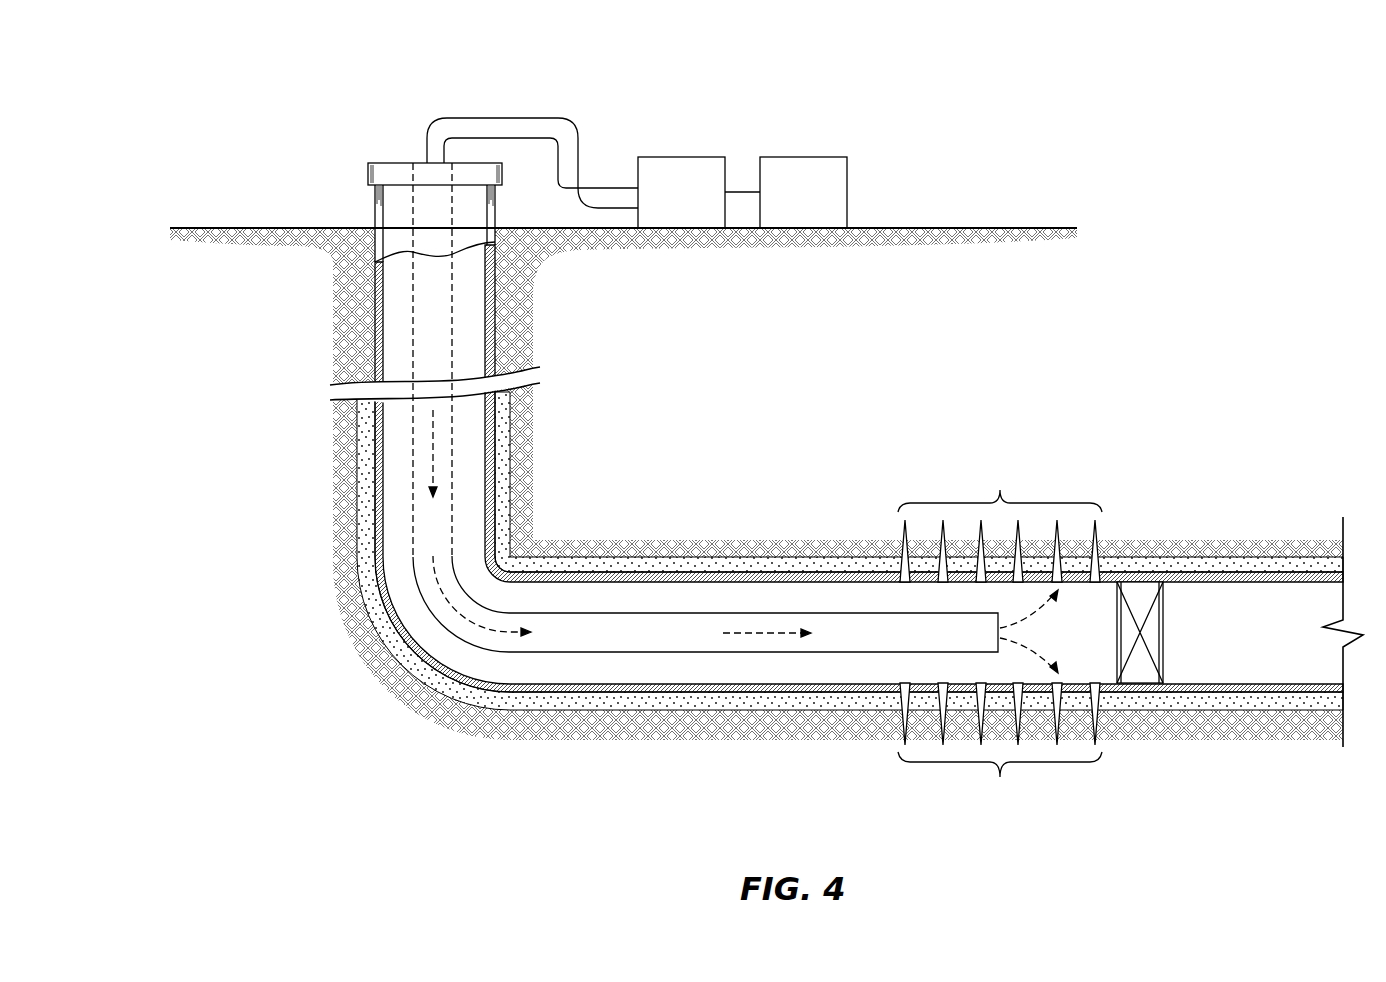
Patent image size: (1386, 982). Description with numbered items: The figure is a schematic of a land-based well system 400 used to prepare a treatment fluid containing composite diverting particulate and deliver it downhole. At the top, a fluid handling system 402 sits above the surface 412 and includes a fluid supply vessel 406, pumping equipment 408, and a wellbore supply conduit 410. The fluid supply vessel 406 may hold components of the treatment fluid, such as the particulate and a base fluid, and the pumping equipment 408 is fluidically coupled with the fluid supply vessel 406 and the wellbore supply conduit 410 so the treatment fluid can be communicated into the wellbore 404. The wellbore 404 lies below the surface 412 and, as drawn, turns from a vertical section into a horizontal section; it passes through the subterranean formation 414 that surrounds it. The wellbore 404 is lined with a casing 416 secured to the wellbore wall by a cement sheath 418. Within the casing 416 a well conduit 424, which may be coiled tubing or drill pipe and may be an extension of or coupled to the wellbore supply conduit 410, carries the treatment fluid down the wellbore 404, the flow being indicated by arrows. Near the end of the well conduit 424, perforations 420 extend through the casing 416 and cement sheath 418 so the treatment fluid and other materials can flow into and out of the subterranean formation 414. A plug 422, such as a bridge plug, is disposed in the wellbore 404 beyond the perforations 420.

The well system 400 is at (283, 63).
The fluid handling system 402 is at (764, 138).
The wellbore 404 is at (836, 477).
The fluid supply vessel 406 is at (803, 157).
The pumping equipment 408 is at (682, 157).
The wellbore supply conduit 410 is at (500, 117).
The surface 412 is at (958, 228).
The subterranean formation 414 is at (592, 310).
The casing 416 is at (682, 573).
The cement sheath 418 is at (788, 558).
The perforations 420 is at (1000, 490).
The plug 422 is at (1143, 588).
The well conduit 424 is at (552, 611).